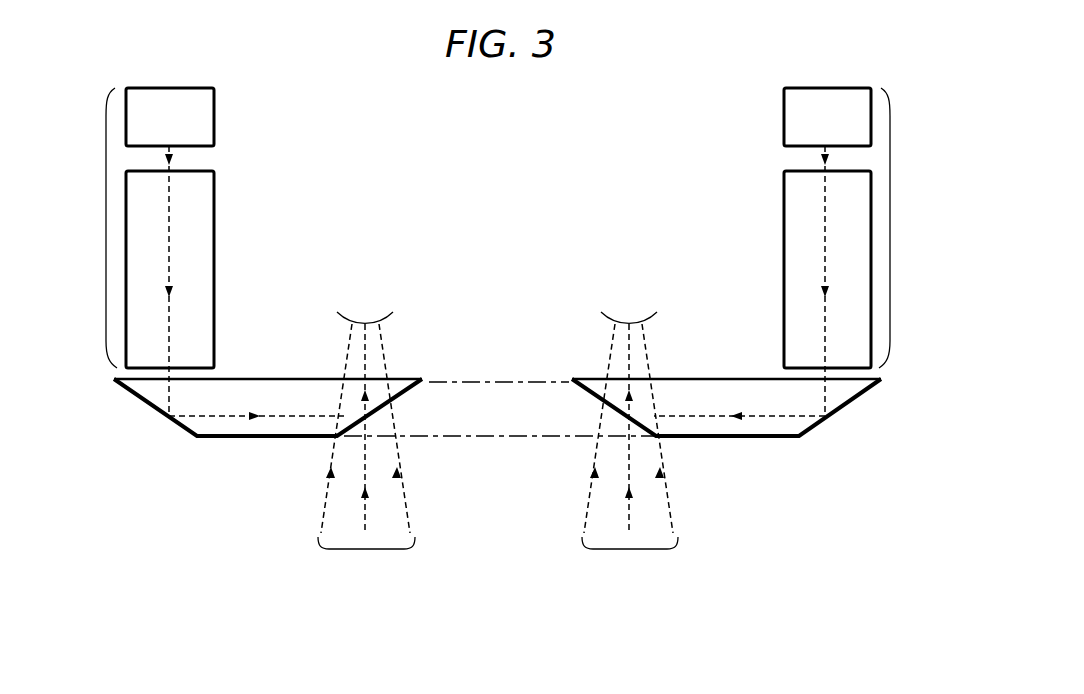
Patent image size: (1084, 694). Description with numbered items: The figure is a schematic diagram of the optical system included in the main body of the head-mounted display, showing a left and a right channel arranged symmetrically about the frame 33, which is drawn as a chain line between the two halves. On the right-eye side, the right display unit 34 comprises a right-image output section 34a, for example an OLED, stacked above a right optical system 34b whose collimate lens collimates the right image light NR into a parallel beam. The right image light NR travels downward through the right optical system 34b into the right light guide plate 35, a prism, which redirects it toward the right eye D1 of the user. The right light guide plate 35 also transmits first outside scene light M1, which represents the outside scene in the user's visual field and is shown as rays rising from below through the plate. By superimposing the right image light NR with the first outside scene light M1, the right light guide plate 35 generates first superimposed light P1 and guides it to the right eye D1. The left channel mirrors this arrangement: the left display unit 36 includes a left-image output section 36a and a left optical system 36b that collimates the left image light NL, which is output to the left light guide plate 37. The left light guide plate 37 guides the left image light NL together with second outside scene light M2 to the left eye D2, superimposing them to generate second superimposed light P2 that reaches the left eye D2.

The frame 33 is at (470, 437).
The right display unit 34 is at (107, 228).
The right-image output section 34a is at (217, 112).
The right optical system 34b is at (217, 218).
The right light guide plate 35 is at (238, 438).
The left display unit 36 is at (891, 228).
The left-image output section 36a is at (783, 112).
The left optical system 36b is at (783, 218).
The left light guide plate 37 is at (772, 438).
The right image light NR is at (173, 148).
The left image light NL is at (823, 148).
The right eye D1 is at (386, 316).
The left eye D2 is at (612, 316).
The first superimposed light P1 is at (339, 352).
The second superimposed light P2 is at (660, 352).
The first outside scene light M1 is at (366, 453).
The second outside scene light M2 is at (630, 453).